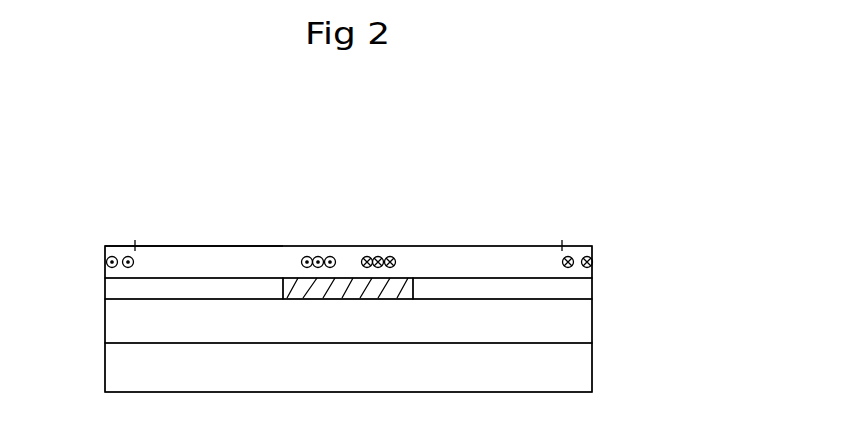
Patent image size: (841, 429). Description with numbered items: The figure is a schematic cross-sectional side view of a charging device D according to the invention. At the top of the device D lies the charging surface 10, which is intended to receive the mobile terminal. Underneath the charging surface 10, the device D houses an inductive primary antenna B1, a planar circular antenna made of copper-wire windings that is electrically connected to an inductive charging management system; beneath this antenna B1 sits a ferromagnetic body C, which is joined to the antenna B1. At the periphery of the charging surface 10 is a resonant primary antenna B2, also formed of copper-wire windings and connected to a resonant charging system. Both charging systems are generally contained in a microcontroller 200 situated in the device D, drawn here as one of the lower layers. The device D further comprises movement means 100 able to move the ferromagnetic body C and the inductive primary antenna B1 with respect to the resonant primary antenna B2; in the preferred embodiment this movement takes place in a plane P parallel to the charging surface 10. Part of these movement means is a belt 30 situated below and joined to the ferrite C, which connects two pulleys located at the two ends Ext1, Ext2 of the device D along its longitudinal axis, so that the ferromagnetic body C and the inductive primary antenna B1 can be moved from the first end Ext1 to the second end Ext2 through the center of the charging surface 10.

The charging surface 10 is at (498, 237).
The charging device D is at (162, 187).
The resonant primary antenna B2 is at (115, 247).
The inductive primary antenna B1 is at (328, 245).
The first end Ext1 is at (144, 232).
The second end Ext2 is at (552, 230).
The plane P is at (228, 277).
The ferromagnetic body C is at (290, 277).
The belt 30 is at (462, 297).
The movement means 100 is at (580, 314).
The microcontroller 200 is at (580, 359).